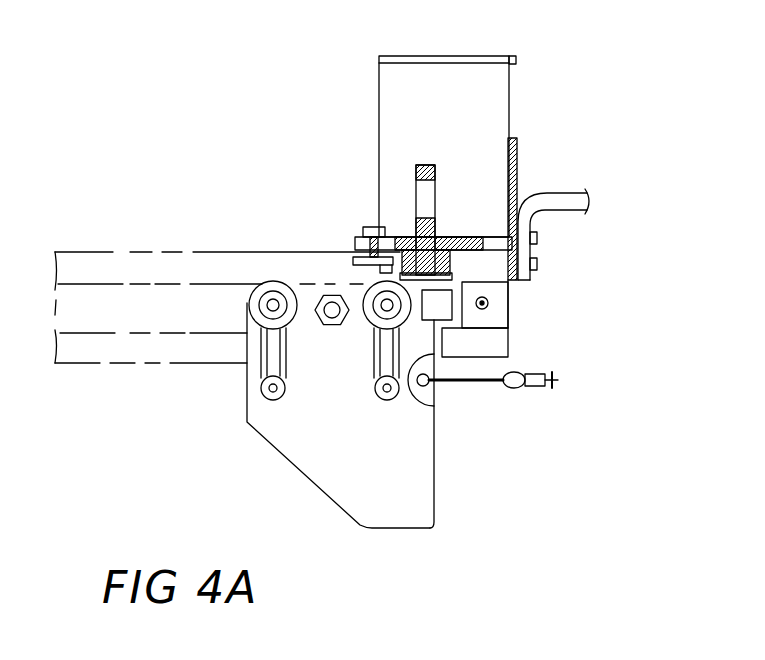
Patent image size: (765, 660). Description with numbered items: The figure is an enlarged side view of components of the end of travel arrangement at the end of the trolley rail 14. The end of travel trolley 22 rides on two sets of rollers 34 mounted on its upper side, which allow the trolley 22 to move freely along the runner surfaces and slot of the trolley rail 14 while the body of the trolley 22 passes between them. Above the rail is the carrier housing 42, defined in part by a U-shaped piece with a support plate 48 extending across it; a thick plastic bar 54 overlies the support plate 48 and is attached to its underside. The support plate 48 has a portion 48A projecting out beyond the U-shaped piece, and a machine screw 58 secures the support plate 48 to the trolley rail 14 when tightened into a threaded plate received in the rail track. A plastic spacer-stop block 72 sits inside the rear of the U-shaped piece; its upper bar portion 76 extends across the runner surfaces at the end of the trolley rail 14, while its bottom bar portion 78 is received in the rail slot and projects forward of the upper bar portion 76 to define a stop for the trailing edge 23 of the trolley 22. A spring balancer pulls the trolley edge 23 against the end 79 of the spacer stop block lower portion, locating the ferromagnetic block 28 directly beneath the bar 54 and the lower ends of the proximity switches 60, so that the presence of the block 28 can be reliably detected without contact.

The trolley rail 14 is at (146, 349).
The end of travel trolley 22 is at (290, 442).
The trailing edge 23 is at (434, 493).
The block 28 is at (445, 307).
The rollers 34 is at (248, 306).
The carrier housing 42 is at (386, 97).
The support plate 48 is at (495, 237).
The portion of support plate 48A is at (357, 237).
The plastic bar 54 is at (455, 263).
The machine screw 58 is at (366, 226).
The proximity switches 60 is at (437, 190).
The spacer-stop block 72 is at (516, 298).
The upper bar portion 76 is at (475, 325).
The bottom bar portion 78 is at (470, 384).
The end of spacer stop block lower portion 79 is at (410, 390).